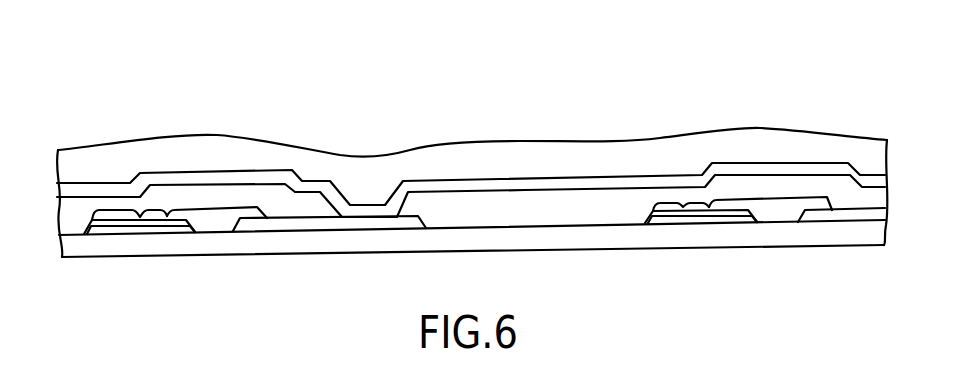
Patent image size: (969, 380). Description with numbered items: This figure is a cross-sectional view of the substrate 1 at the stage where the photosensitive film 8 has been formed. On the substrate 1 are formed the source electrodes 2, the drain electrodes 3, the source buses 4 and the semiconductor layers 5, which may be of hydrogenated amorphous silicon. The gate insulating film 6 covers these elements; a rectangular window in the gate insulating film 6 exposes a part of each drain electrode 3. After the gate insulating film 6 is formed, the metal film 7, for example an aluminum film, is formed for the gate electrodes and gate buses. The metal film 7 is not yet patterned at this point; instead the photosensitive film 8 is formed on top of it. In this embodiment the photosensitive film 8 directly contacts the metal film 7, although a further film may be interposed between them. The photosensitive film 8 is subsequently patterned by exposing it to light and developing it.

The substrate 1 is at (537, 238).
The source electrode 2 is at (165, 210).
The drain electrode 3 is at (305, 220).
The source bus 4 is at (115, 210).
The semiconductor layer 5 is at (213, 215).
The gate insulating film 6 is at (247, 193).
The metal film 7 is at (480, 168).
The photosensitive film 8 is at (433, 165).